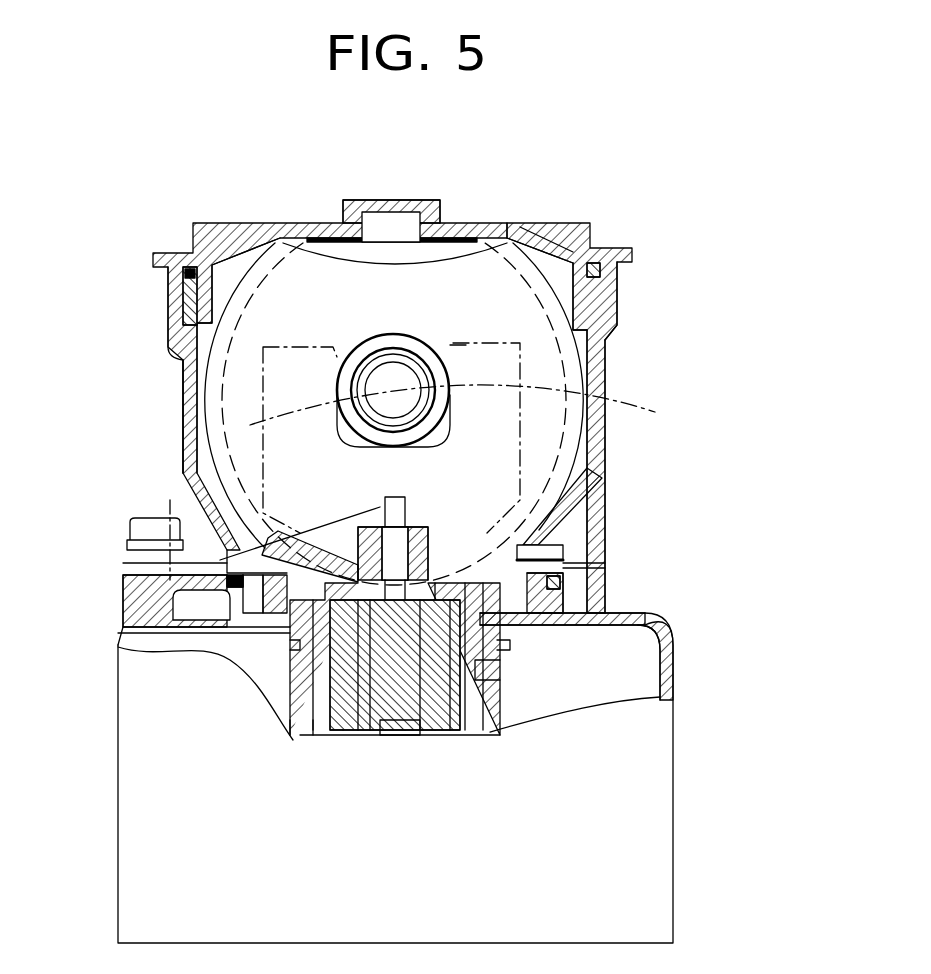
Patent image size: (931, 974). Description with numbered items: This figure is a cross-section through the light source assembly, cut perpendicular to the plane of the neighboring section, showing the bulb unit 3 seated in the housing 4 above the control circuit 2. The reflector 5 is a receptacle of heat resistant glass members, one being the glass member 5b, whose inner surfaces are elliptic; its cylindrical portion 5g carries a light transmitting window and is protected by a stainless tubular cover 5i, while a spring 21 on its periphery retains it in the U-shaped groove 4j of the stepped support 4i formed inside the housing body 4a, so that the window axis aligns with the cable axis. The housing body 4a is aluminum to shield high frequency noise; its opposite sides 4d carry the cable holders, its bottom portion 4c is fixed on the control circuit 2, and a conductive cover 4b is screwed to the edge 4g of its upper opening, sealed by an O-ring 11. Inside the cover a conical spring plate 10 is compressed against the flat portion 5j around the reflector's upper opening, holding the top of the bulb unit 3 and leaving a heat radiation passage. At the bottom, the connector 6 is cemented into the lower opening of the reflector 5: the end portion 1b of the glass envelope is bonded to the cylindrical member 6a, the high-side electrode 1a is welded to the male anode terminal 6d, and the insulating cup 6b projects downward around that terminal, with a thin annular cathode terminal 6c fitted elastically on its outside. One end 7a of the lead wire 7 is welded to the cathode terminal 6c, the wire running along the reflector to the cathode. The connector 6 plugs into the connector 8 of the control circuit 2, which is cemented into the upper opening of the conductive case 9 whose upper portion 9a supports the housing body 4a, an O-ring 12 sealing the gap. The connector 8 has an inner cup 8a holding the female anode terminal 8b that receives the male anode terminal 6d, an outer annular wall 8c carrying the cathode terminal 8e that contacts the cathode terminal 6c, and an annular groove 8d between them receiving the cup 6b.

The high-side electrode 1a is at (262, 645).
The end portion of the glass envelope 1b is at (380, 500).
The control circuit 2 is at (680, 652).
The bulb unit 3 is at (232, 275).
The housing 4 is at (607, 447).
The housing body 4a is at (187, 410).
The cover 4b is at (567, 233).
The bottom portion of the housing body 4c is at (592, 603).
The sides of the housing body 4d is at (603, 365).
The edge of the upper opening 4g is at (608, 340).
The stepped support 4i is at (473, 410).
The U-shaped groove 4j is at (345, 412).
The reflector 5 is at (505, 255).
The heat resistant glass member 5b is at (183, 360).
The cylindrical portion 5g is at (357, 345).
The tubular cover 5i is at (410, 345).
The flat portion 5j is at (290, 245).
The connector 6 is at (553, 535).
The cylindrical member 6a is at (430, 548).
The cup 6b is at (480, 673).
The cathode terminal 6c is at (553, 567).
The male anode terminal 6d is at (360, 720).
The lead wire 7 is at (230, 562).
The end of the lead wire 7a is at (273, 647).
The connector 8 is at (513, 647).
The inner cup 8a is at (288, 720).
The female anode terminal 8b is at (393, 720).
The outer annular wall 8c is at (247, 720).
The annular groove 8d is at (315, 720).
The cathode terminal 8e is at (508, 641).
The case 9 is at (630, 878).
The upper portion of the case 9a is at (165, 615).
The spring plate 10 is at (395, 230).
The O-ring 11 is at (614, 270).
The O-ring 12 is at (575, 609).
The spring 21 is at (462, 352).